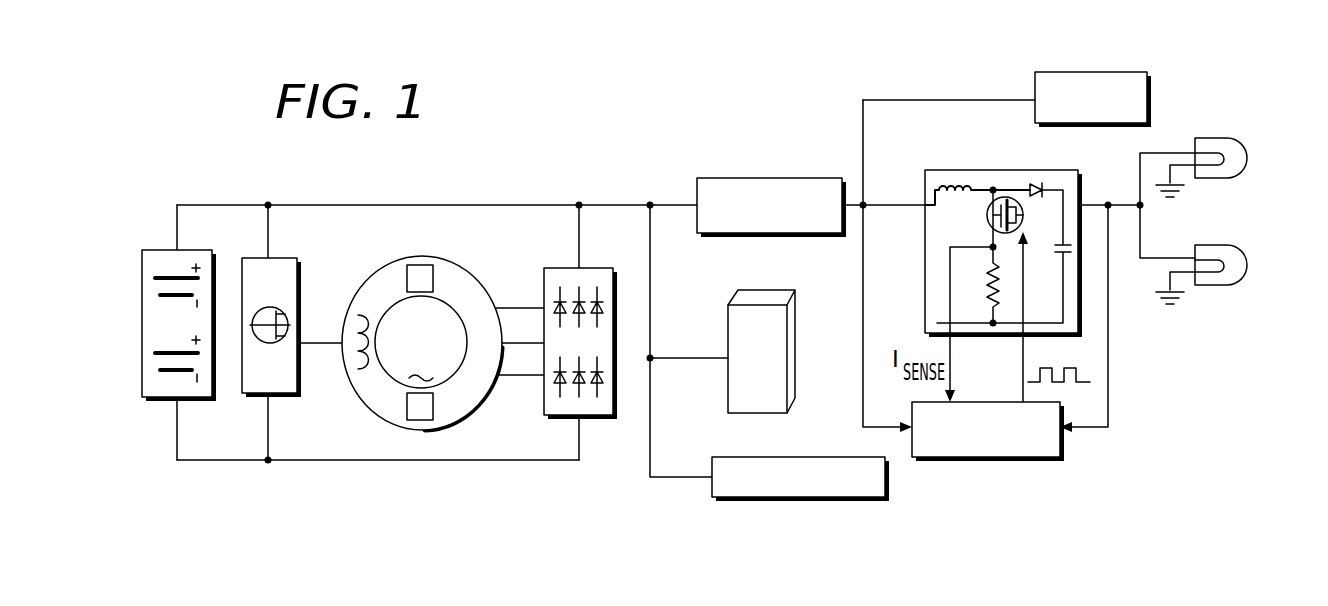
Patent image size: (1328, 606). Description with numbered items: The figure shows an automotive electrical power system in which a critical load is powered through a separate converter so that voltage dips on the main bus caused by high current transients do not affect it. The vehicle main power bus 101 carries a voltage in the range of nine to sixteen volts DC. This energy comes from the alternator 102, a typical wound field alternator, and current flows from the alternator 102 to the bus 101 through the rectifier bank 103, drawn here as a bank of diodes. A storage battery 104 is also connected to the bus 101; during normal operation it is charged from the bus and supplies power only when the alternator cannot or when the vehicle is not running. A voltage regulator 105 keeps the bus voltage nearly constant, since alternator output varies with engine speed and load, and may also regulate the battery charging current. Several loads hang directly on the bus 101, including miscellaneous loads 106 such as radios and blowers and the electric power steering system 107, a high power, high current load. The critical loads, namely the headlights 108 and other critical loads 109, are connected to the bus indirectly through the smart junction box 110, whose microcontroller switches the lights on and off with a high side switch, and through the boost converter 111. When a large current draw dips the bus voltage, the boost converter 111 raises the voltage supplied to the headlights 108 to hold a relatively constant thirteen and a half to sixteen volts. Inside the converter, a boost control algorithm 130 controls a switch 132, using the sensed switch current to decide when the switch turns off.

The vehicle main power bus 101 is at (497, 205).
The alternator 102 is at (458, 425).
The rectifier bank 103 is at (562, 268).
The storage battery 104 is at (143, 343).
The voltage regulator 105 is at (278, 397).
The miscellaneous loads 106 is at (738, 457).
The electric power steering (EPS) system 107 is at (748, 290).
The headlights 108 is at (1248, 160).
The other critical loads 109 is at (1118, 72).
The smart junction box 110 is at (716, 178).
The boost converter 111 is at (1011, 269).
The boost control algorithm 130 is at (1007, 461).
The switch 132 is at (989, 223).